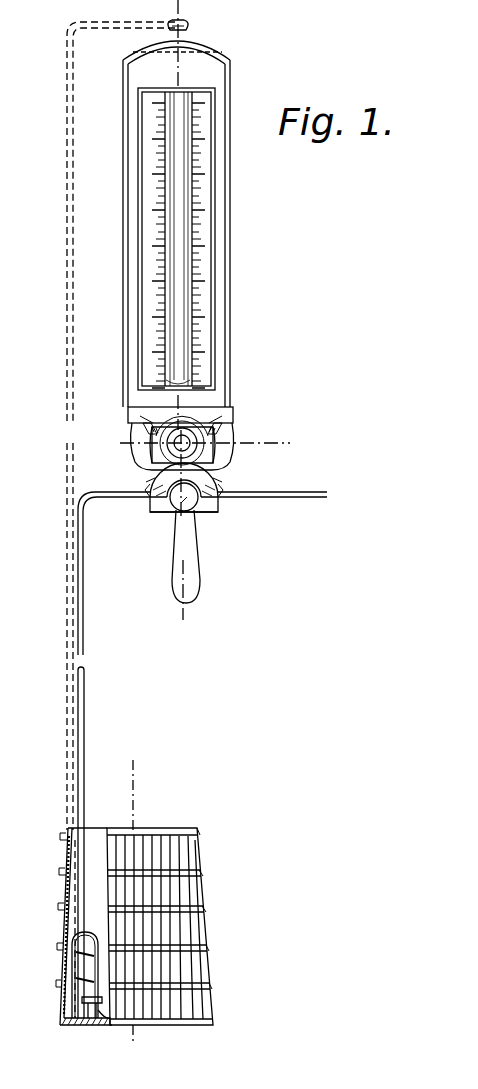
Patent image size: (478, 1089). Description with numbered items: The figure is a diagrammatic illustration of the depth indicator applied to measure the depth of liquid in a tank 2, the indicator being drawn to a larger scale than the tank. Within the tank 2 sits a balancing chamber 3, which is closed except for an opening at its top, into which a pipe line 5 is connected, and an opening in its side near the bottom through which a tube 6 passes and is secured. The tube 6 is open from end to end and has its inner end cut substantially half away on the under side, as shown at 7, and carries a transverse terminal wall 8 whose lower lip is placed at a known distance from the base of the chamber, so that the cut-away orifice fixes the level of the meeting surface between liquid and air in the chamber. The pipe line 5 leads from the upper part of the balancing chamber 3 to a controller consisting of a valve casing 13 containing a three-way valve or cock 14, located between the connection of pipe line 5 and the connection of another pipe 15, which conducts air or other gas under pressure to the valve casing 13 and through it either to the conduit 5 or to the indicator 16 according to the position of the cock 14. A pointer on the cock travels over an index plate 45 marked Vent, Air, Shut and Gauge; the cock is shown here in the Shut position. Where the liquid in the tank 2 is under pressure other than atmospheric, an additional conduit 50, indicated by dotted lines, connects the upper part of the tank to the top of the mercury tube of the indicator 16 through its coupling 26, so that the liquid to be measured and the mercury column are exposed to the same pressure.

The tank 2 is at (200, 890).
The balancing chamber 3 is at (80, 965).
The pipe line 5 is at (84, 770).
The tube 6 is at (112, 1022).
The cut away portion 7 is at (67, 1021).
The transverse terminal wall 8 is at (84, 1000).
The valve casing 13 is at (165, 513).
The valve or cock 14 is at (193, 510).
The pipe or tube 15 is at (273, 492).
The indicator 16 is at (232, 298).
The coupling 26 is at (186, 29).
The index plate 45 is at (216, 480).
The additional conduit 50 is at (74, 253).